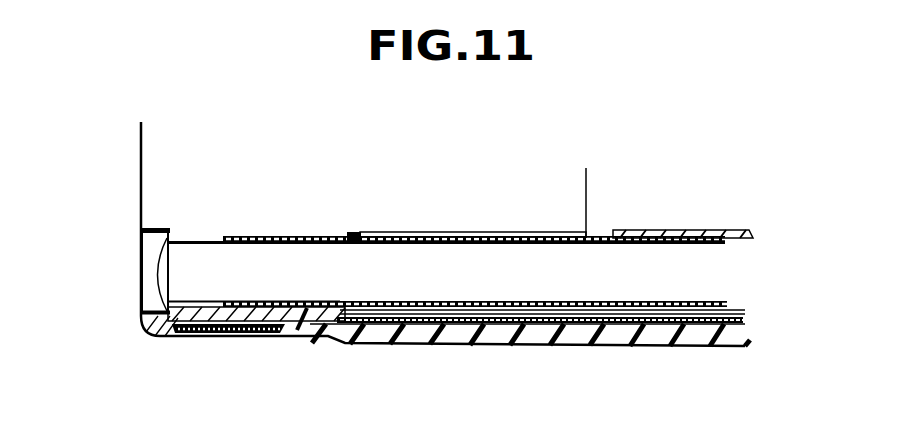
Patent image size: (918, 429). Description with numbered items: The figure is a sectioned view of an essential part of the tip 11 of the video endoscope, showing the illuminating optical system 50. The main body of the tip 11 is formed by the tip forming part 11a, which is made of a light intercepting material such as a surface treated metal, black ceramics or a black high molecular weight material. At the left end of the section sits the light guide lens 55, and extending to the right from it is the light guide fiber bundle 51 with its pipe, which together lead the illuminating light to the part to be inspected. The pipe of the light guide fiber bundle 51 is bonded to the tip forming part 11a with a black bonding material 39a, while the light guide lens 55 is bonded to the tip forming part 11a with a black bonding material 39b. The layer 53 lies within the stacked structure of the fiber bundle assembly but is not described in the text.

The tip 11 is at (204, 336).
The tip forming part 11a is at (160, 338).
The black bonding material 39a is at (292, 337).
The black bonding material 39b is at (158, 229).
The illuminating optical system 50 is at (132, 284).
The light guide fiber bundle 51 is at (582, 290).
The shield layer 53 is at (357, 340).
The light guide lens 55 is at (153, 256).